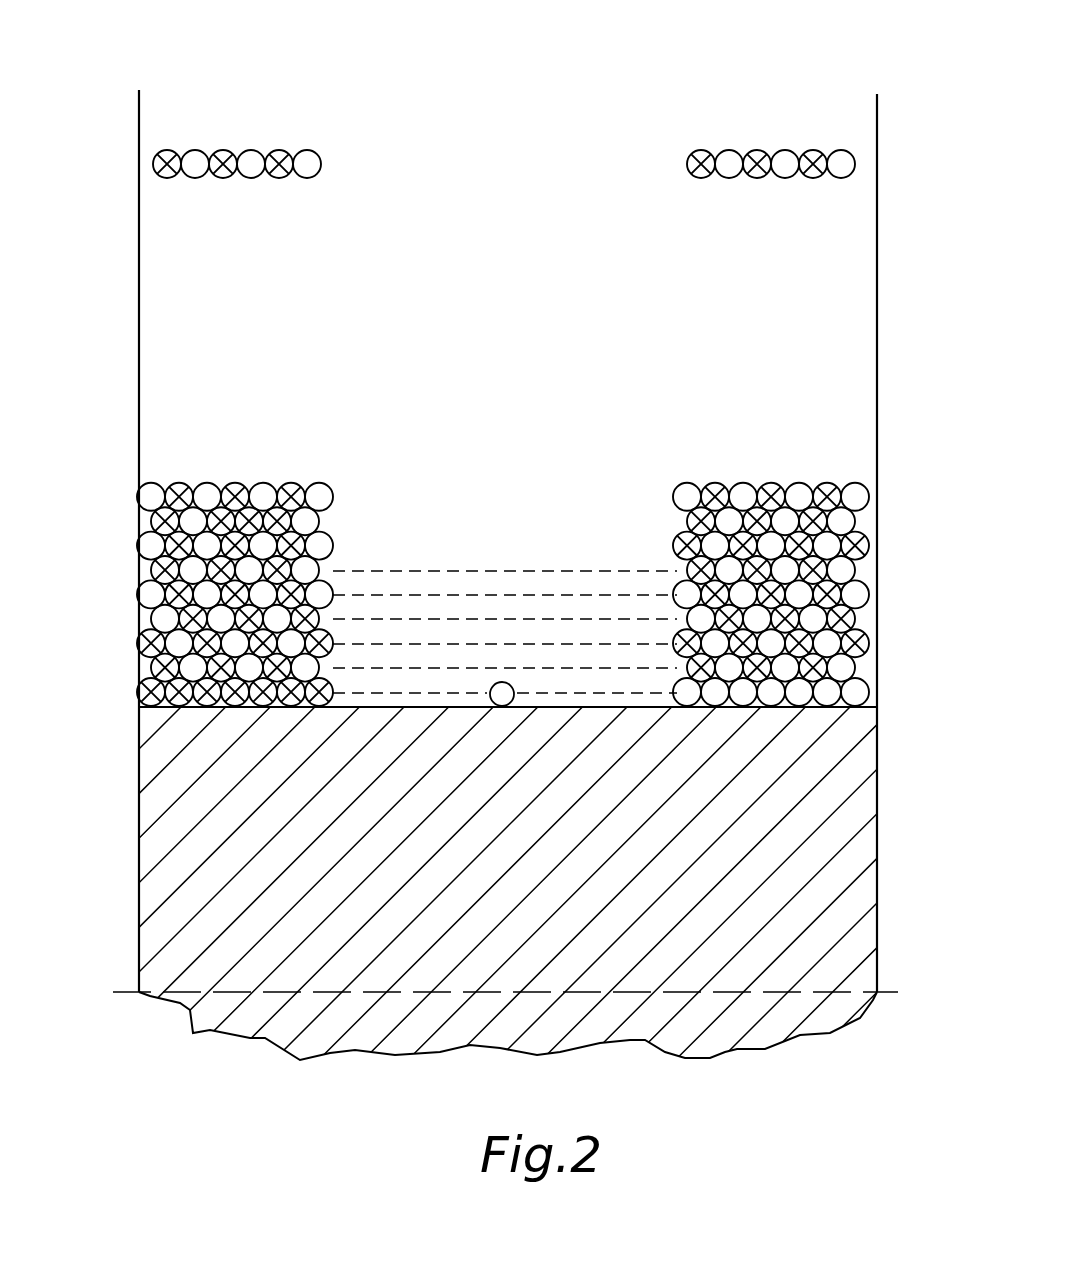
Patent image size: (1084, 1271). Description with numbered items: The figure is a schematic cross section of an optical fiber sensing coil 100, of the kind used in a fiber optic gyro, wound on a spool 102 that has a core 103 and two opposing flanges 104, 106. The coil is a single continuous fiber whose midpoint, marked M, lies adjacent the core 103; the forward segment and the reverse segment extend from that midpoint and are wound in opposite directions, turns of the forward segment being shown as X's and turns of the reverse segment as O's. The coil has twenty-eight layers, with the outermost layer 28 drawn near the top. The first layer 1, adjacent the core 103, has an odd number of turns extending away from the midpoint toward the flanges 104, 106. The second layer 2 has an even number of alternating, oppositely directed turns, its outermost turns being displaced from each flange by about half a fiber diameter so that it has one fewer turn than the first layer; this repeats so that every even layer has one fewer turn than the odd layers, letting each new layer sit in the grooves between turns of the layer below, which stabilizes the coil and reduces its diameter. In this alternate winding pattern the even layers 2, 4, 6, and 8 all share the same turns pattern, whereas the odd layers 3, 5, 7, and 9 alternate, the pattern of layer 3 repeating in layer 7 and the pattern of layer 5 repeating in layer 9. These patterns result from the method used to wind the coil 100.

The sensing coil 100 is at (485, 80).
The spool 102 is at (877, 952).
The core 103 is at (850, 831).
The flange 104 is at (877, 300).
The flange 106 is at (139, 348).
The first layer 1 is at (524, 692).
The second layer 2 is at (531, 668).
The third layer 3 is at (524, 643).
The fourth layer 4 is at (531, 619).
The fifth layer 5 is at (524, 594).
The sixth layer 6 is at (531, 570).
The seventh layer 7 is at (524, 546).
The eighth layer 8 is at (531, 521).
The ninth layer 9 is at (524, 497).
The twenty-eighth layer 28 is at (539, 164).